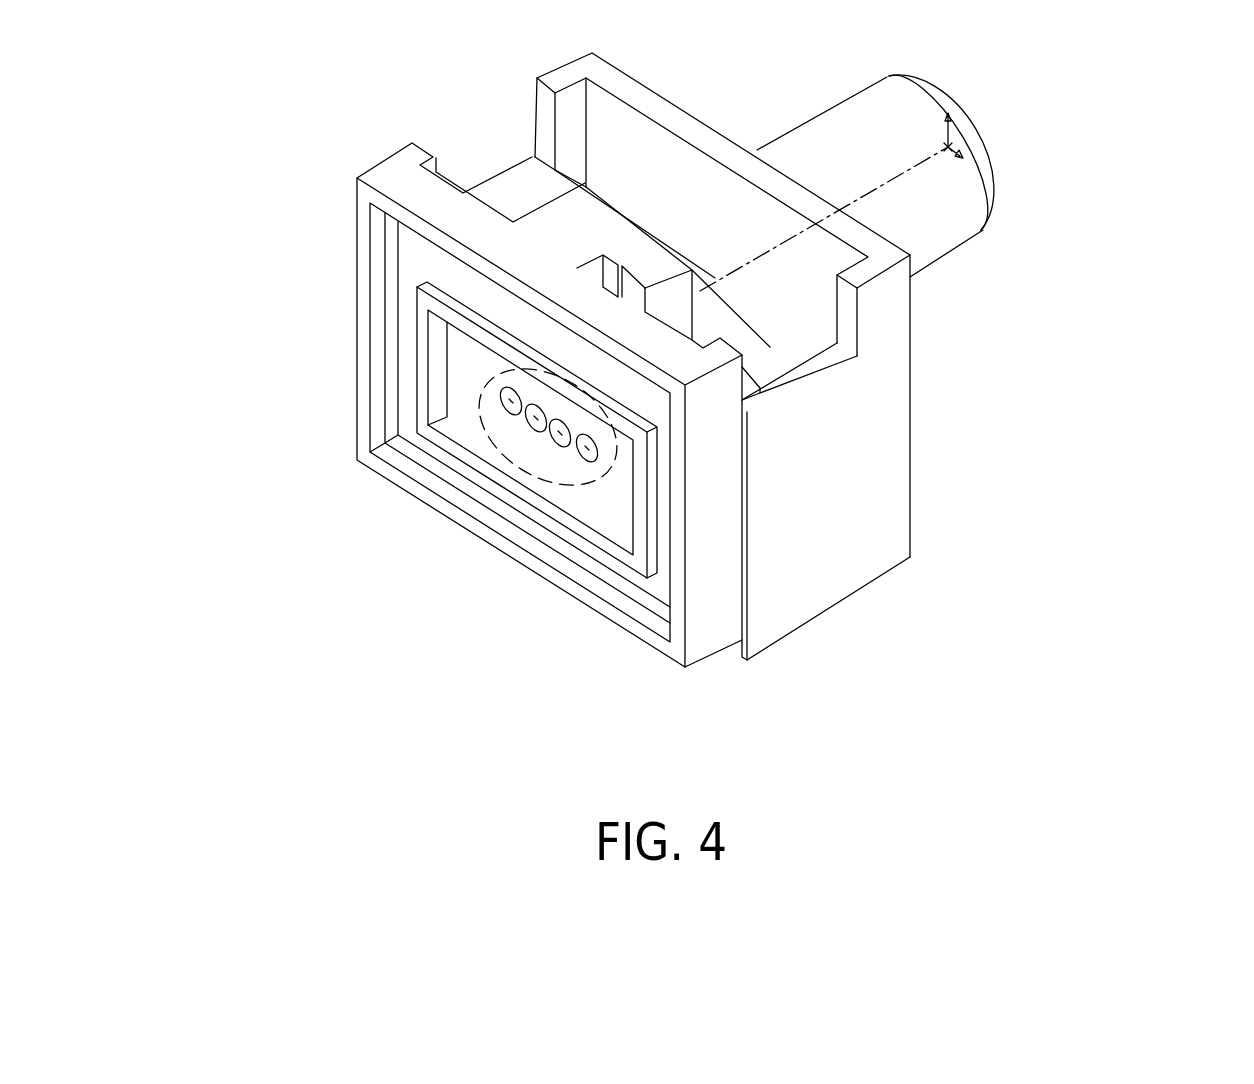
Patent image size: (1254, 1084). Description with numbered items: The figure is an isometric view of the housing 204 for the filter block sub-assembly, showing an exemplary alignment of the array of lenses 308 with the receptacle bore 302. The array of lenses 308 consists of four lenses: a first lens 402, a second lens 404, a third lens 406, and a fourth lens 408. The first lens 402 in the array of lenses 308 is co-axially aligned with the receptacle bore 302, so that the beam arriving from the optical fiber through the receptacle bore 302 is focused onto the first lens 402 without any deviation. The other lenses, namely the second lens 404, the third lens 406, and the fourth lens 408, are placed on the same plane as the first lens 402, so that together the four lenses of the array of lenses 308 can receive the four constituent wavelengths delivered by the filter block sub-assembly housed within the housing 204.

The housing 204 is at (1117, 655).
The receptacle bore 302 is at (937, 267).
The array of lenses 308 is at (565, 373).
The first lens 402 is at (498, 400).
The second lens 404 is at (525, 417).
The third lens 406 is at (550, 433).
The fourth lens 408 is at (578, 448).